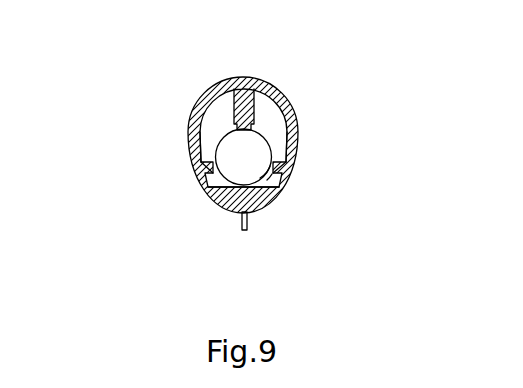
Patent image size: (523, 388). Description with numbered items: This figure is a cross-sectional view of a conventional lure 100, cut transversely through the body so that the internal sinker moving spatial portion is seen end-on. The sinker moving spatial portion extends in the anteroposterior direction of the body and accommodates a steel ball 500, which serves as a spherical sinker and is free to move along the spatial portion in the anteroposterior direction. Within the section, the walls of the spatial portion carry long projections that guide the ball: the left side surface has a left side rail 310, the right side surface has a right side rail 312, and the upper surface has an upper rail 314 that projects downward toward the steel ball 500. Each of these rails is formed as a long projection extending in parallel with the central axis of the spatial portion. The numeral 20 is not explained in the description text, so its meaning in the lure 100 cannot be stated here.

The housing shell 20 is at (203, 89).
The upper rail 314 is at (253, 122).
The left side rail 310 is at (192, 166).
The right side rail 312 is at (284, 170).
The steel ball 500 is at (207, 195).
The lure 100 is at (357, 256).